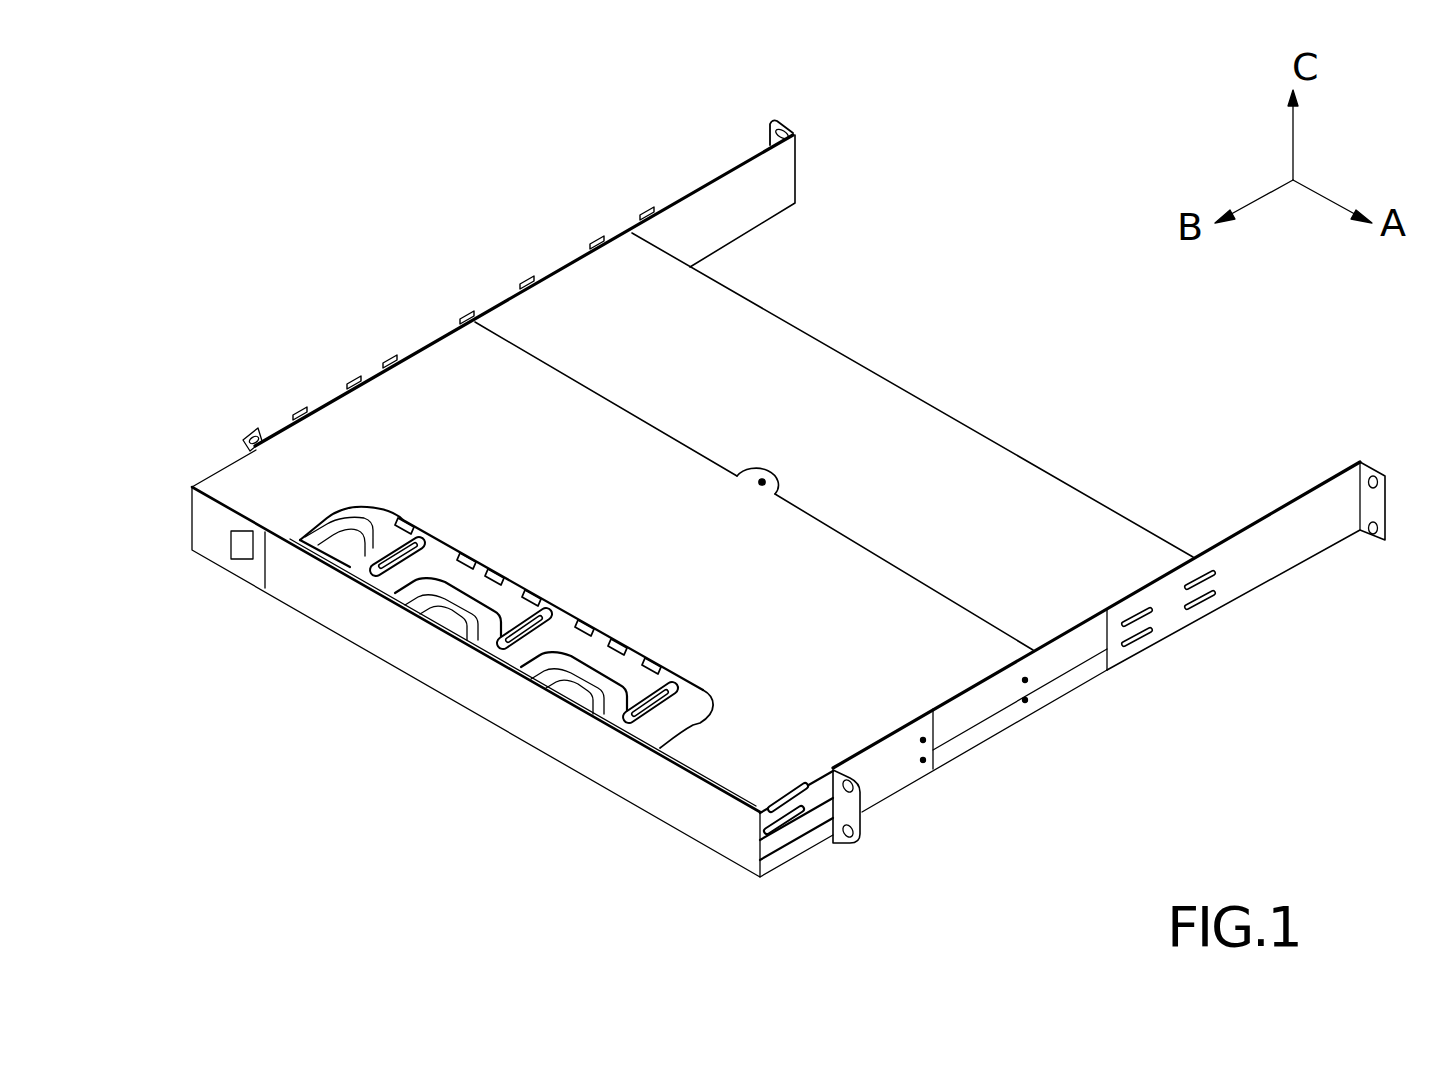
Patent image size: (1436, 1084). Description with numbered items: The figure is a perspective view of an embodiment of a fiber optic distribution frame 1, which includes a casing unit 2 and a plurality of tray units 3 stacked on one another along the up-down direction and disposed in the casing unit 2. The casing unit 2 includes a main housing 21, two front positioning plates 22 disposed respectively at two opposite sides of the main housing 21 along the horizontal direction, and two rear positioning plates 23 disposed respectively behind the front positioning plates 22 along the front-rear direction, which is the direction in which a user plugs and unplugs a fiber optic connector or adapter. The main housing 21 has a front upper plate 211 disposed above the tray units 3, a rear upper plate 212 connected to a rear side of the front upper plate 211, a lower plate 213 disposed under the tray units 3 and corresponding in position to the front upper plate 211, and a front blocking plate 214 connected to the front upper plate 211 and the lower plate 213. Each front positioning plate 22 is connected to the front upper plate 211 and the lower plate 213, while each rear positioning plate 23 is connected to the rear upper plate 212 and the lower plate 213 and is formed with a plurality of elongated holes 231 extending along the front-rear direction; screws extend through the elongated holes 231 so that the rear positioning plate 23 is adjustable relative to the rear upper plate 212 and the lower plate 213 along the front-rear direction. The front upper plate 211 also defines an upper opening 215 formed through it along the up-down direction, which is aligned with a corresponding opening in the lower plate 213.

The fiber optic distribution frame 1 is at (572, 207).
The casing unit 2 is at (866, 338).
The main housing 21 is at (419, 353).
The front upper plate 211 is at (377, 397).
The rear upper plate 212 is at (965, 440).
The lower plate 213 is at (793, 845).
The front blocking plate 214 is at (632, 786).
The upper opening 215 is at (698, 700).
The front positioning plate 22 is at (243, 440).
The rear positioning plate 23 is at (797, 163).
The elongated holes 231 is at (1207, 600).
The tray units 3 is at (473, 608).